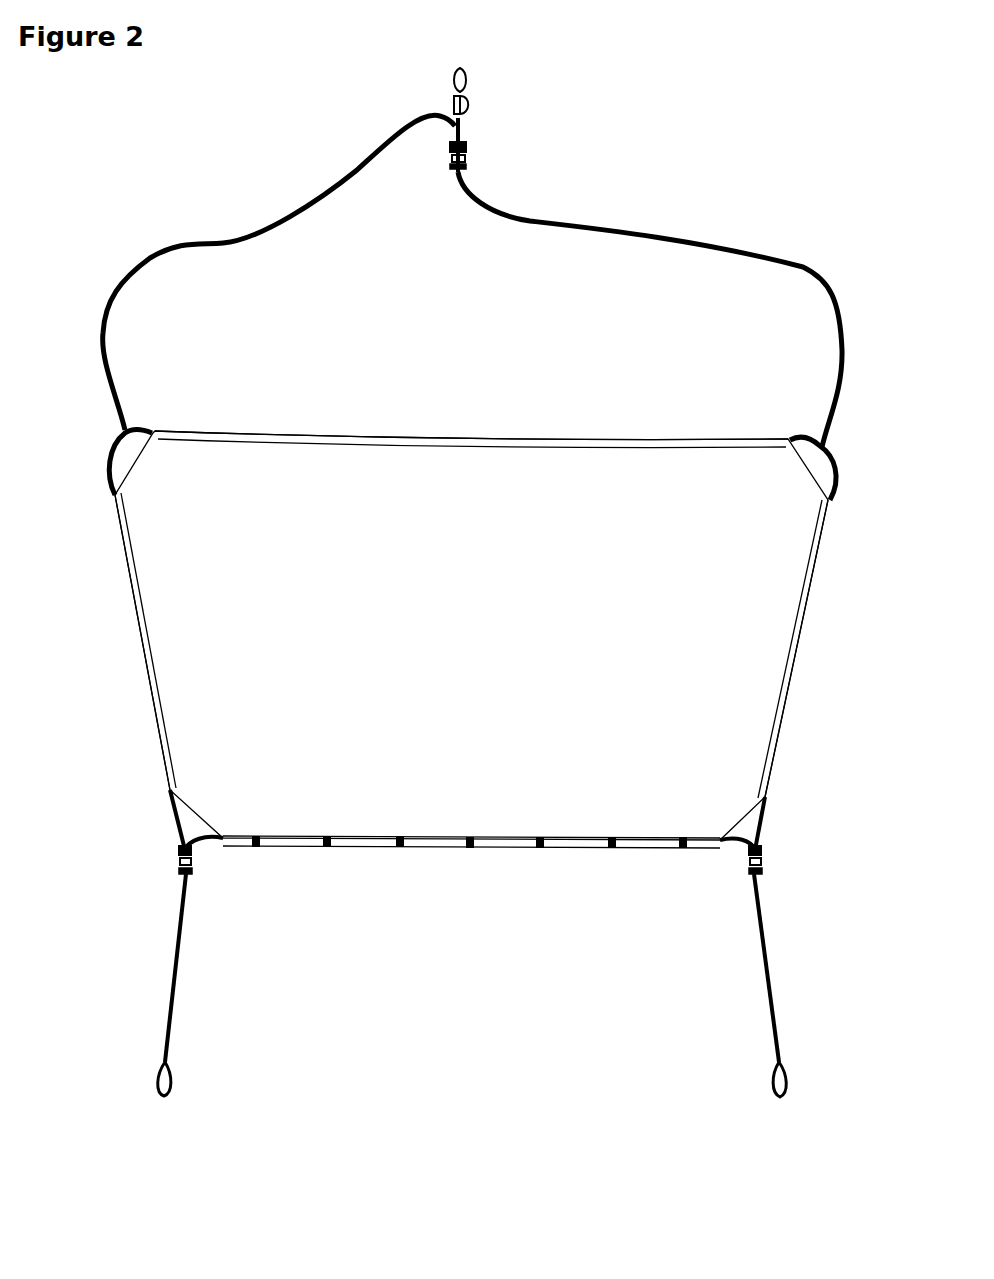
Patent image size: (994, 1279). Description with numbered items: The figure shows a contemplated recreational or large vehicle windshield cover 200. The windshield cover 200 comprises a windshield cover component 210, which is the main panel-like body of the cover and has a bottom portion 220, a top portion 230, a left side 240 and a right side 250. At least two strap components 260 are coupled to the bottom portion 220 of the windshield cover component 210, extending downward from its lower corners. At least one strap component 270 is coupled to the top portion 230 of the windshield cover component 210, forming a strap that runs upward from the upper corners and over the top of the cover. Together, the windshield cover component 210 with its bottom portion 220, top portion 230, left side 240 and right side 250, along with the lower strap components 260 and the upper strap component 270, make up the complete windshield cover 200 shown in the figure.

The windshield cover 200 is at (625, 123).
The windshield cover component 210 is at (503, 496).
The bottom portion 220 is at (472, 856).
The top portion 230 is at (359, 428).
The left side 240 is at (128, 648).
The right side 250 is at (795, 683).
The strap components 260 is at (178, 991).
The strap component 270 is at (533, 216).